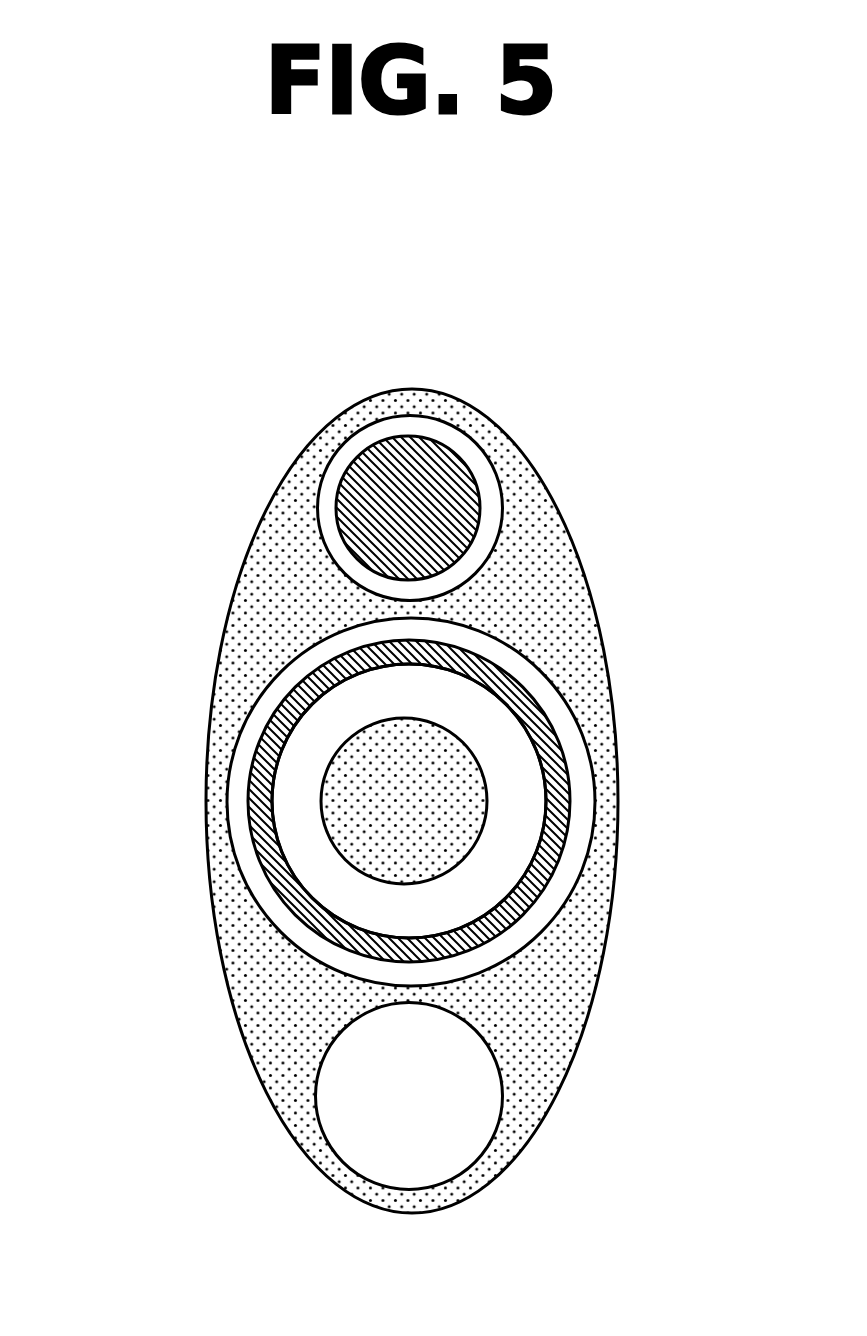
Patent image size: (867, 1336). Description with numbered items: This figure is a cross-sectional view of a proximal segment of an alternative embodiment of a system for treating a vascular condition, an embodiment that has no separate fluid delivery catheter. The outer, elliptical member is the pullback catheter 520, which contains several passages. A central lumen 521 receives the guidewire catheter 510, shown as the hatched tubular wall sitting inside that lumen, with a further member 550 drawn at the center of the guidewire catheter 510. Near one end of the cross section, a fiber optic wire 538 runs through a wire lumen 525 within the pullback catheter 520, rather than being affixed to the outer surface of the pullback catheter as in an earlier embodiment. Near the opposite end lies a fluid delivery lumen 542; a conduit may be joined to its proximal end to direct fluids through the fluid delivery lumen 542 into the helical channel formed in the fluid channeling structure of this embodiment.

The pullback catheter 520 is at (222, 913).
The wire lumen 525 is at (327, 518).
The fiber optic wire 538 is at (450, 502).
The guidewire catheter 510 is at (263, 773).
The lumen 521 is at (497, 740).
The inner core member 550 is at (427, 815).
The fluid delivery lumen 542 is at (450, 1093).